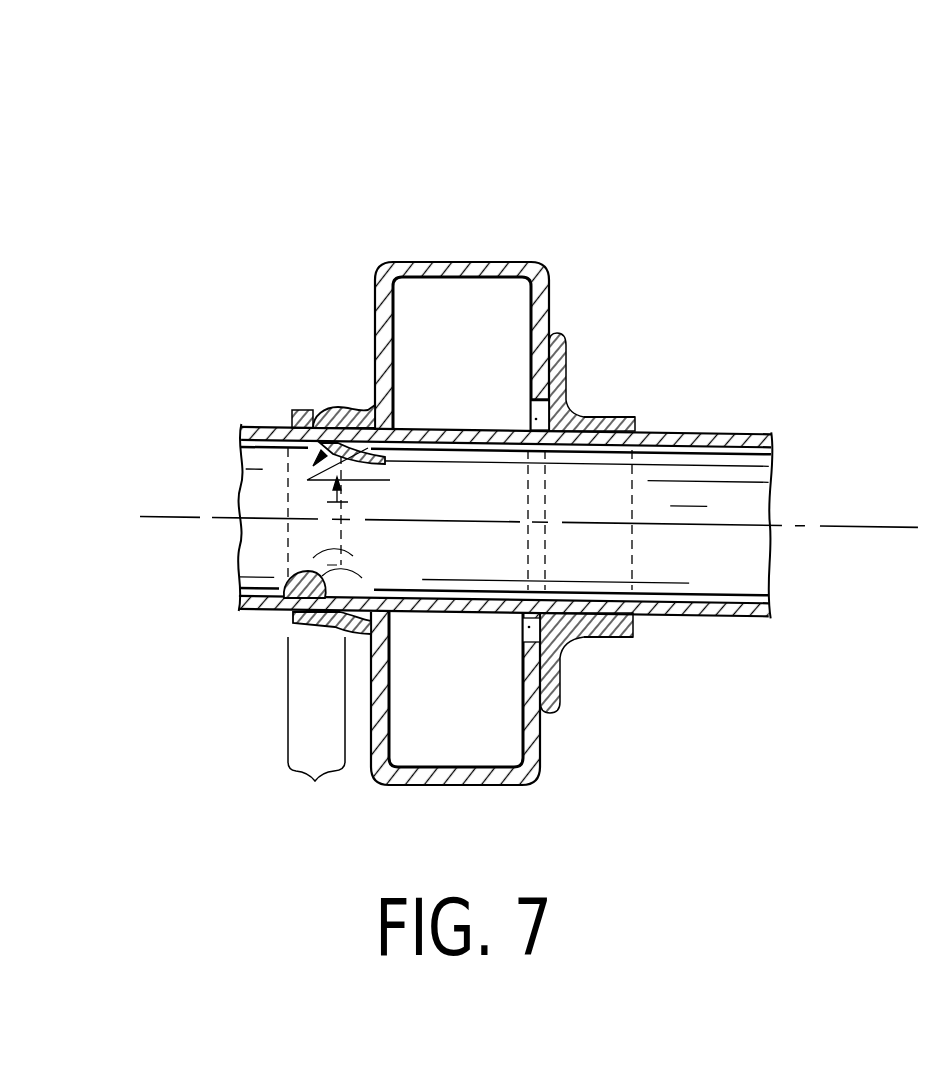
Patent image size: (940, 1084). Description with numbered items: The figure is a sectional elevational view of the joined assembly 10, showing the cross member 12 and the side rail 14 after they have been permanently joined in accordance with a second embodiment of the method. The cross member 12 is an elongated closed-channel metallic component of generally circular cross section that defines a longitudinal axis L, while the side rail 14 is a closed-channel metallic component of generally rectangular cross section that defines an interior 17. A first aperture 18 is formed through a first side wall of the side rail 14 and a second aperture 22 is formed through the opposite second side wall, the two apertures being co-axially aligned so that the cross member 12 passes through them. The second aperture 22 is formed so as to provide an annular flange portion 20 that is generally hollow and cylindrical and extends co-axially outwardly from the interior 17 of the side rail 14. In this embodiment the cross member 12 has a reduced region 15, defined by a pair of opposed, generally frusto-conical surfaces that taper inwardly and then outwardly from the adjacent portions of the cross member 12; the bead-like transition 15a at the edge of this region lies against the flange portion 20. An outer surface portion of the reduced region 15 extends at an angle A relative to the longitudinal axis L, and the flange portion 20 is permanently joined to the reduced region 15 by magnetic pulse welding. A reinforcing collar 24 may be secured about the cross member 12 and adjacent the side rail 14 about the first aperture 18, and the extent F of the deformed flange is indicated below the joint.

The fuel rail / tube assembly 10 is at (688, 184).
The cross member 12 is at (748, 431).
The side rail 14 is at (450, 261).
The reduced region 15 is at (284, 602).
The bead of tube 15a is at (337, 417).
The interior 17 is at (453, 710).
The first aperture 18 is at (584, 495).
The flange portion 20 is at (341, 430).
The second aperture 22 is at (296, 492).
The reinforcing collar 24 is at (567, 390).
The longitudinal axis L is at (843, 523).
The angle A is at (358, 473).
The length F is at (316, 732).